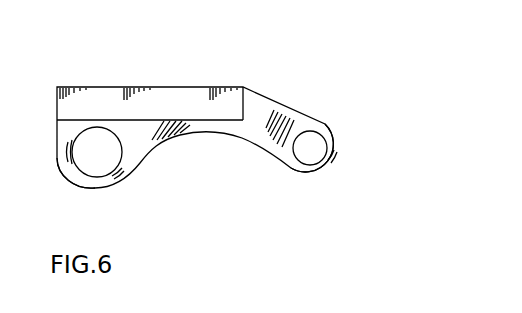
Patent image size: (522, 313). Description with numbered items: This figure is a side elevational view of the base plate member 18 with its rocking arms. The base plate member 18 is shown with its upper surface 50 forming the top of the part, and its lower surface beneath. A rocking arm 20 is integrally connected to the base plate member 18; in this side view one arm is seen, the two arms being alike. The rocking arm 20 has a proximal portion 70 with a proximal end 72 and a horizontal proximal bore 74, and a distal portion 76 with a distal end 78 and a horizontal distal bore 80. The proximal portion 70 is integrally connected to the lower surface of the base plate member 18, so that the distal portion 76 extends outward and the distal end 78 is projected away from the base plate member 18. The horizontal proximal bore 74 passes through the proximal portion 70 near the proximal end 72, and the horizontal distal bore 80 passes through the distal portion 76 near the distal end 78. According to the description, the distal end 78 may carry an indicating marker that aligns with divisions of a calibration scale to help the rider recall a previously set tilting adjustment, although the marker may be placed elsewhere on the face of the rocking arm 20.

The base plate member 18 is at (78, 90).
The rocking arm 20 is at (276, 98).
The upper surface 50 is at (172, 88).
The proximal portion 70 is at (152, 148).
The proximal end 72 is at (62, 168).
The horizontal proximal bore 74 is at (97, 171).
The distal portion 76 is at (268, 150).
The distal end 78 is at (335, 166).
The horizontal distal bore 80 is at (313, 160).